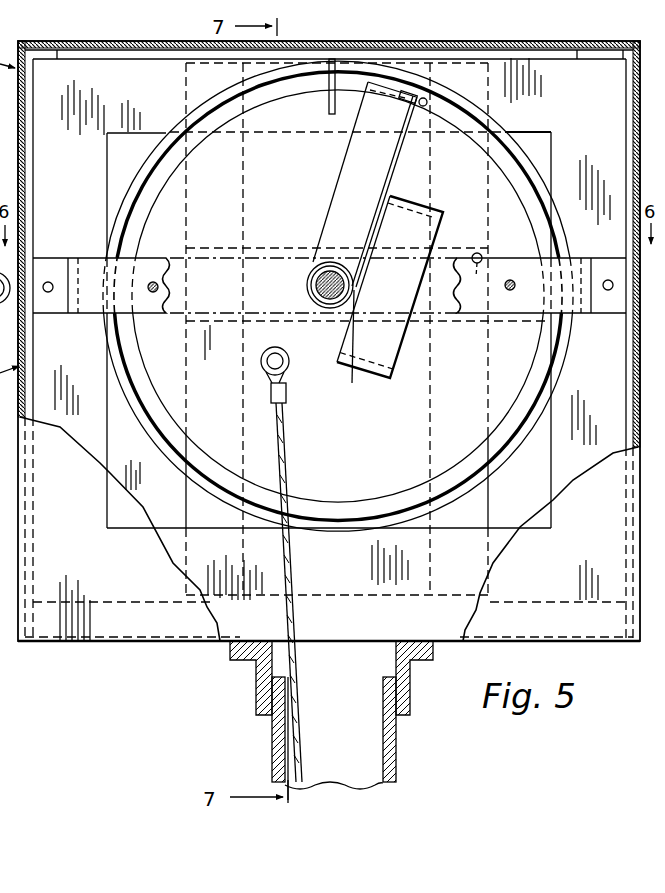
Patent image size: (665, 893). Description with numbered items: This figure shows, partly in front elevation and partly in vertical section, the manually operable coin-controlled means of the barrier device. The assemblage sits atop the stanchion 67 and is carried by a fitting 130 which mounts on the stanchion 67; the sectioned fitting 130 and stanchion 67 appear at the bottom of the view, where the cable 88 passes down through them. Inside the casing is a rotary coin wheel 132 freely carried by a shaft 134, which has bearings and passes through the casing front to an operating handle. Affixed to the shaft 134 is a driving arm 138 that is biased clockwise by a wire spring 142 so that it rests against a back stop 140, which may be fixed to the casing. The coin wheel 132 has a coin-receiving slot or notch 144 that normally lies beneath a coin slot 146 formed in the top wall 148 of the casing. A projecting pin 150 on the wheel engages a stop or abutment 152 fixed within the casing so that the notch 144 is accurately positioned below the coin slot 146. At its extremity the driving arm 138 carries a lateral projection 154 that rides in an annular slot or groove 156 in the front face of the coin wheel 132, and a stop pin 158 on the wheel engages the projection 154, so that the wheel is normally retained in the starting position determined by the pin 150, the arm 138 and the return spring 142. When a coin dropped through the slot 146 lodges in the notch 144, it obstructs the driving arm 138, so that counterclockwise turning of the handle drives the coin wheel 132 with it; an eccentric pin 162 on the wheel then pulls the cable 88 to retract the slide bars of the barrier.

The stanchion 67 is at (395, 745).
The cable 88 is at (302, 716).
The fitting 130 is at (257, 680).
The coin wheel 132 is at (315, 296).
The shaft 134 is at (307, 286).
The driving arm 138 is at (338, 187).
The back stop 140 is at (415, 236).
The wire spring 142 is at (392, 160).
The coin-receiving slot 144 is at (328, 97).
The coin slot 146 is at (336, 42).
The top wall 148 is at (496, 42).
The projecting pin 150 is at (478, 252).
The stop or abutment 152 is at (478, 278).
The lateral projection 154 is at (402, 100).
The annular slot or groove 156 is at (140, 190).
The stop pin 158 is at (428, 106).
The eccentric pin 162 is at (261, 358).